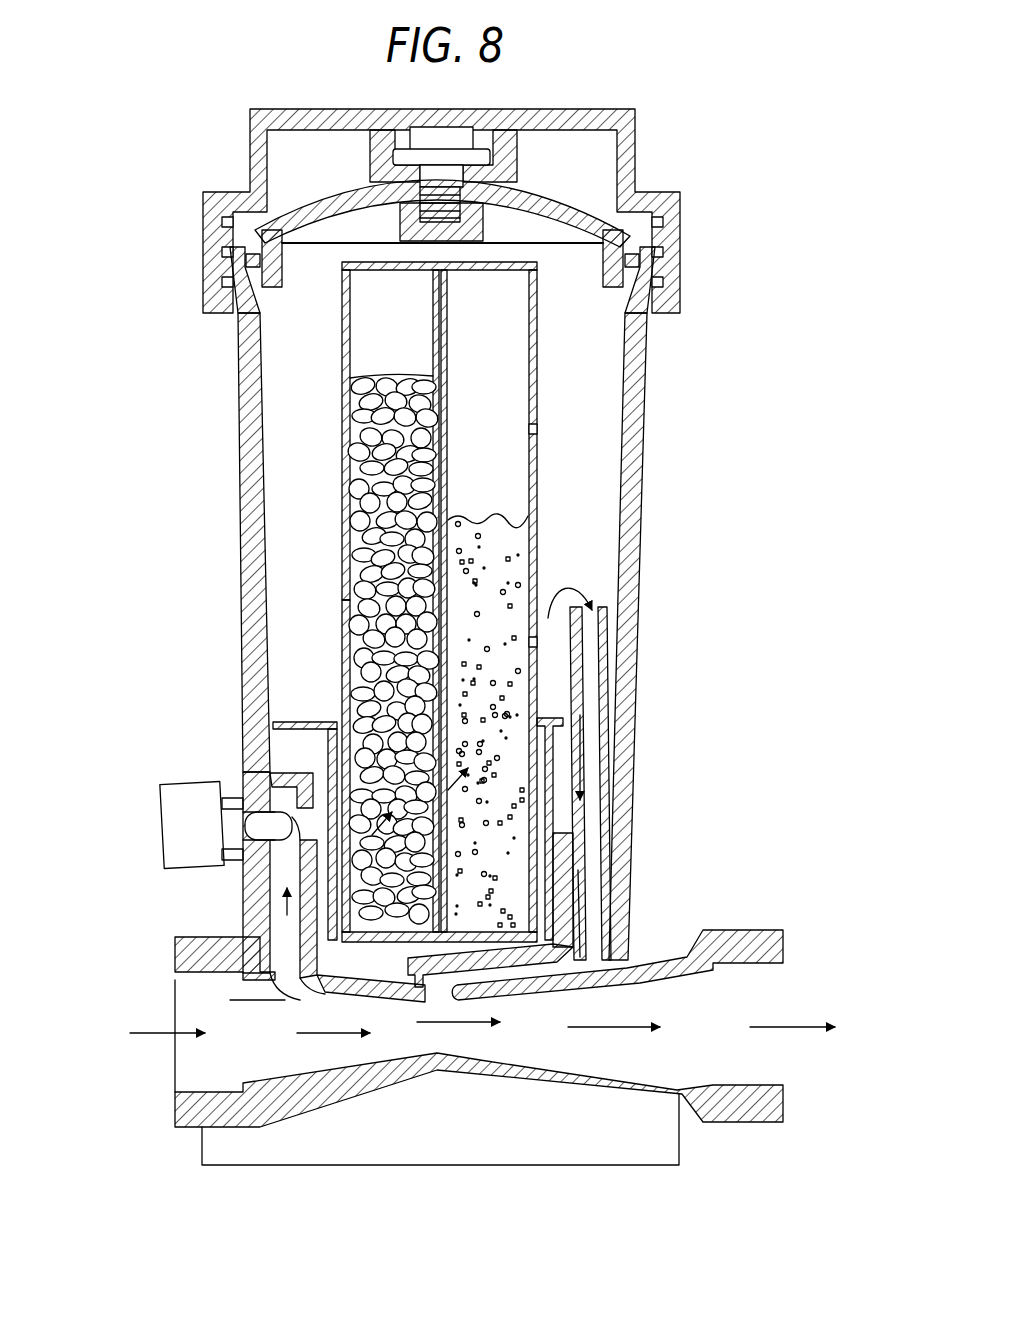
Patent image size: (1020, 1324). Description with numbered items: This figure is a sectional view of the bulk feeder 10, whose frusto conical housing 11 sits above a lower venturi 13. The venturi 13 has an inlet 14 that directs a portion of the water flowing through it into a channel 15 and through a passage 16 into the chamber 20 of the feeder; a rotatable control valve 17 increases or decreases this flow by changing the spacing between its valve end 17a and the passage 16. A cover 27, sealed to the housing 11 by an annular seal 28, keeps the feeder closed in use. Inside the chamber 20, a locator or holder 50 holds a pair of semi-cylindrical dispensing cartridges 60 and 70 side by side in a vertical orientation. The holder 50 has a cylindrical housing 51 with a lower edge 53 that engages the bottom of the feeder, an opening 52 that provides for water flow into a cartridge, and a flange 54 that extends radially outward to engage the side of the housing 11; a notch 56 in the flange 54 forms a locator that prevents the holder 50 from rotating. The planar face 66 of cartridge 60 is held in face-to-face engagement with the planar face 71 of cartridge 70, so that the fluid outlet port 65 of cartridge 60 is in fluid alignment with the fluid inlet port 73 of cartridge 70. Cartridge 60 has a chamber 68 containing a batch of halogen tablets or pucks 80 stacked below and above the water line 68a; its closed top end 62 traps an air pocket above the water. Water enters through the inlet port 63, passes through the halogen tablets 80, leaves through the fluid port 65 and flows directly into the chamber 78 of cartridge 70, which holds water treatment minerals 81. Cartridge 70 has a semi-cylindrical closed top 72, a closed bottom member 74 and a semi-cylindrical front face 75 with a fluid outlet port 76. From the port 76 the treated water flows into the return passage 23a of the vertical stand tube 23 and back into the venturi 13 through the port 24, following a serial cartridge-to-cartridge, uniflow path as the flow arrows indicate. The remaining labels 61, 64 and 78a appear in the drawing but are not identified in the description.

The bulk feeder 10 is at (175, 352).
The frusto conical housing 11 is at (252, 555).
The lower venturi 13 is at (190, 1105).
The inlet 14 is at (300, 990).
The channel 15 is at (285, 885).
The passage 16 is at (300, 845).
The rotateable control valve 17 is at (175, 797).
The valve end 17a is at (283, 842).
The chamber 20 is at (295, 553).
The vertical stand tube 23 is at (603, 695).
The fluid passage 23a is at (586, 680).
The port 24 is at (441, 1062).
The cover 27 is at (250, 150).
The annular seal 28 is at (252, 262).
The locater 50 is at (328, 718).
The cylindrical housing 51 is at (334, 757).
The opening 52 is at (300, 860).
The lower edge 53 is at (610, 960).
The flange 54 is at (320, 723).
The notch 56 is at (565, 742).
The semi-cylindrical cartridge 60 is at (338, 450).
The divider wall 61 is at (345, 484).
The closed top 62 is at (345, 262).
The inlet port 63 is at (290, 900).
The inlet flow 64 is at (388, 942).
The fluid outlet port 65 is at (347, 697).
The planar face 66 is at (348, 378).
The chamber 68 is at (382, 583).
The water line 68a is at (345, 497).
The second semi-cylindrical cartridge 70 is at (543, 460).
The planar face 71 is at (440, 408).
The semi-cylindrical closed top 72 is at (530, 262).
The fluid inlet port 73 is at (450, 818).
The closed bottom member 74 is at (512, 998).
The semi-cylindrical front face 75 is at (533, 428).
The fluid outlet port 76 is at (537, 643).
The chamber 78 is at (457, 561).
The media flow 78a is at (500, 517).
The halogen tablets 80 is at (352, 650).
The minerals 81 is at (513, 533).